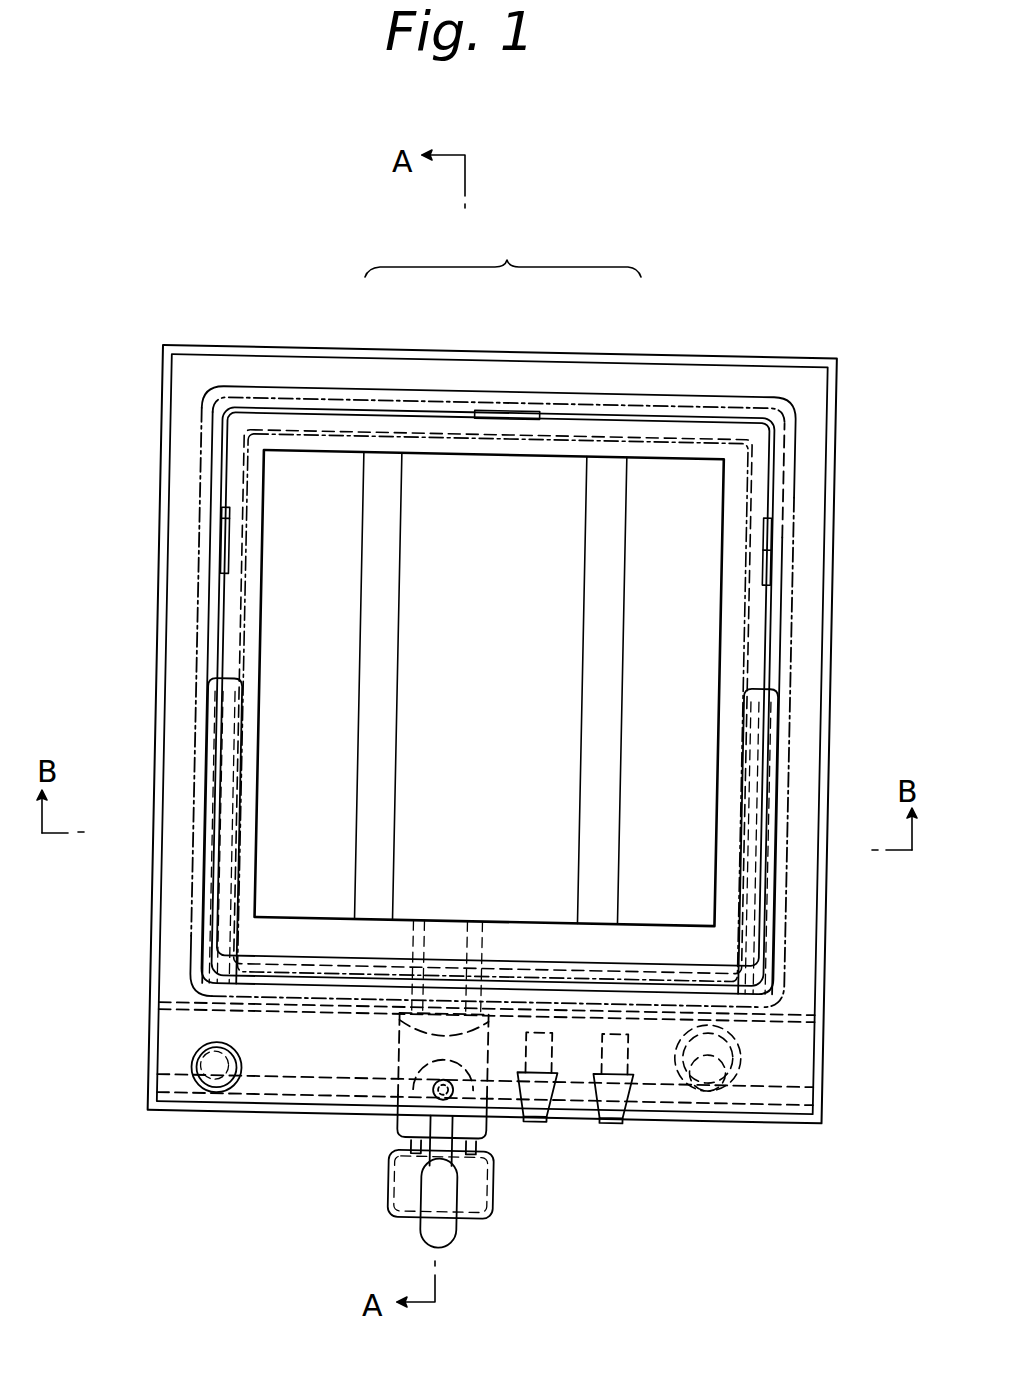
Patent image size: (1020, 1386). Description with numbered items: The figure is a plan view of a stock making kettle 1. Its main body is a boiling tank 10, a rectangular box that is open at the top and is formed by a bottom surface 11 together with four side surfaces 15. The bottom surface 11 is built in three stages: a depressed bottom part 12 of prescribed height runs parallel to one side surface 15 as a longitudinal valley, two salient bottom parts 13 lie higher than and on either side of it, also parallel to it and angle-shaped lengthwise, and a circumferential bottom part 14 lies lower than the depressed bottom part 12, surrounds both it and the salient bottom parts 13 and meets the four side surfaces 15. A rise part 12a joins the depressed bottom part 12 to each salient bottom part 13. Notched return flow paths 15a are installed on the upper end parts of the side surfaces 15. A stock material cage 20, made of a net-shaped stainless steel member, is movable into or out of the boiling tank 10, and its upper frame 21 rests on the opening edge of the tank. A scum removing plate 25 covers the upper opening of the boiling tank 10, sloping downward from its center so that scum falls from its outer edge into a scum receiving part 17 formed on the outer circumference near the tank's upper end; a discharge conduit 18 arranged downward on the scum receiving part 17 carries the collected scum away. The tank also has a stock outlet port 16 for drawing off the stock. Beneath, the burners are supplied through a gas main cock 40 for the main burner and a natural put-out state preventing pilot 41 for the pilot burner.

The stock making kettle 1 is at (790, 313).
The boiling tank 10 is at (303, 403).
The bottom surface 11 is at (503, 249).
The depressed bottom part 12 is at (430, 470).
The rise part 12a is at (605, 632).
The salient bottom part 13 is at (342, 470).
The circumferential bottom part 14 is at (568, 432).
The side surface 15 is at (690, 415).
The return flow path 15a is at (238, 517).
The stock outlet port 16 is at (392, 1197).
The scum receiving part 17 is at (170, 1043).
The discharge conduit 18 is at (197, 1097).
The stock material cage 20 is at (240, 618).
The frame 21 is at (228, 777).
The scum removing plate 25 is at (195, 703).
The gas main cock 40 is at (537, 1124).
The natural put-out state preventing pilot 41 is at (728, 1082).